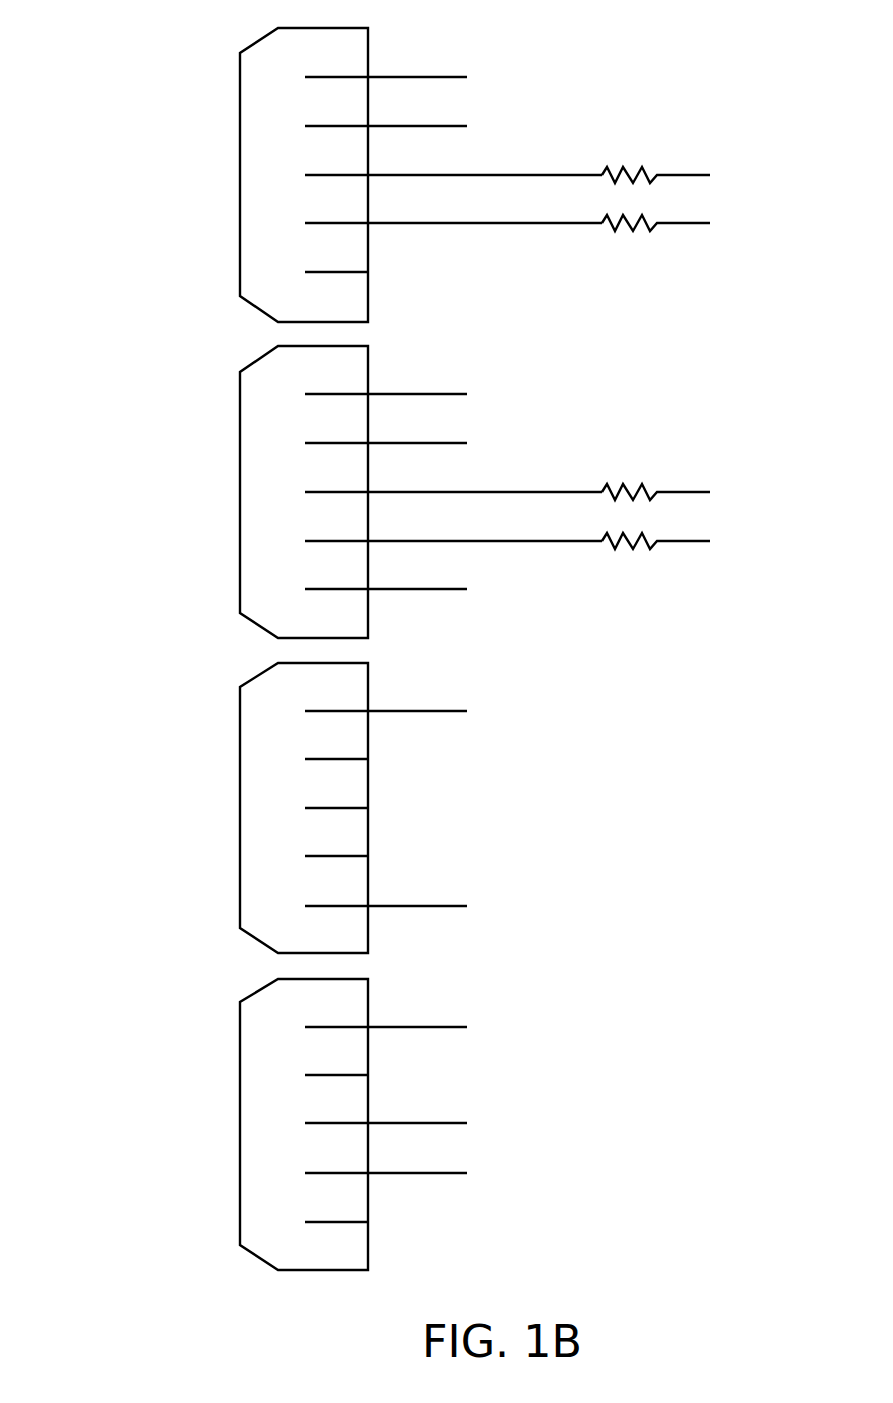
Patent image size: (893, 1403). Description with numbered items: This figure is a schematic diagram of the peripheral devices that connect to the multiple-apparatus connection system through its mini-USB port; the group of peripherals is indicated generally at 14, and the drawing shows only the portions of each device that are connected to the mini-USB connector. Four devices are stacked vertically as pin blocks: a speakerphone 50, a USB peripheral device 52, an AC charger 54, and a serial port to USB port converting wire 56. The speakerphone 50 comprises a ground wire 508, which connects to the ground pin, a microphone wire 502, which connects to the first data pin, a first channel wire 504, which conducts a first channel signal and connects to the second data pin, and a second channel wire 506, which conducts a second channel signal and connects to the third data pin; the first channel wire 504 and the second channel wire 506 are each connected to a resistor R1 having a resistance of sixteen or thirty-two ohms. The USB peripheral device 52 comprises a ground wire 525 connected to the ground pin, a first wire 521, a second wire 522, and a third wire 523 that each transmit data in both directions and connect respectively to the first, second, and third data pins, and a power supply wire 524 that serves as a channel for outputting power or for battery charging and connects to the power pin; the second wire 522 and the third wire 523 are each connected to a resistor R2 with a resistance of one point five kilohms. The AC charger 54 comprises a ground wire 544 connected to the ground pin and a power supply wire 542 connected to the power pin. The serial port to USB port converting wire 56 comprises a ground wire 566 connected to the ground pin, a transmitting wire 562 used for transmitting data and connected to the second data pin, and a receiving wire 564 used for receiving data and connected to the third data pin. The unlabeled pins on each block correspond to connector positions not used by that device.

The connector assembly 14 is at (127, 535).
The speakerphone 50 is at (257, 43).
The USB peripheral device 52 is at (255, 361).
The AC charger 54 is at (255, 676).
The serial port to USB port converting wire 56 is at (258, 992).
The ground wire 508 is at (433, 77).
The microphone wire 502 is at (433, 126).
The first channel wire 504 is at (440, 175).
The second channel wire 506 is at (433, 223).
The resistor R1 is at (648, 173).
The ground wire 525 is at (433, 394).
The first wire 521 is at (433, 443).
The second wire 522 is at (440, 492).
The third wire 523 is at (433, 541).
The power supply wire 524 is at (433, 589).
The resistor R2 is at (648, 490).
The ground wire 544 is at (433, 711).
The power supply wire 542 is at (433, 906).
The ground wire 566 is at (433, 1027).
The transmitting wire 562 is at (433, 1123).
The receiving wire 564 is at (433, 1173).